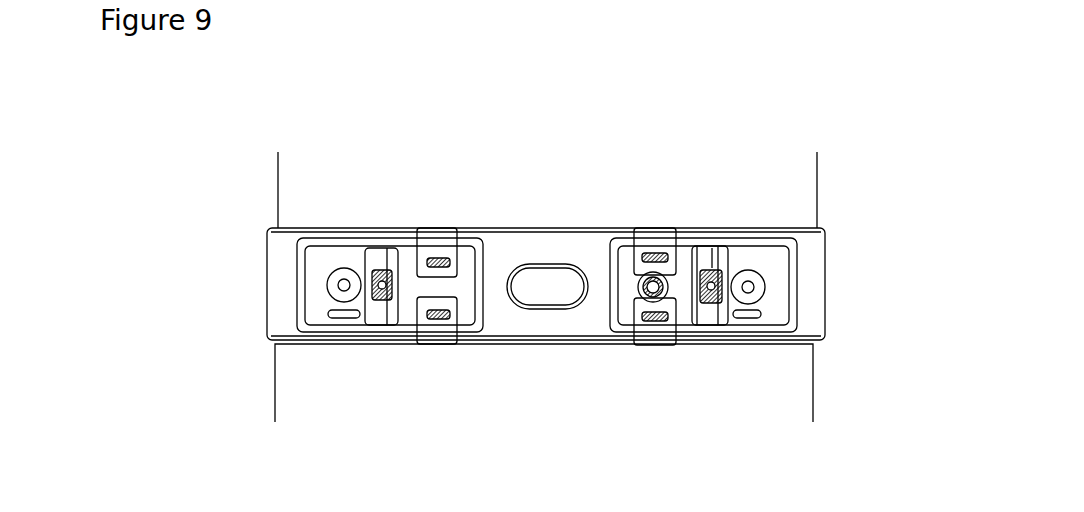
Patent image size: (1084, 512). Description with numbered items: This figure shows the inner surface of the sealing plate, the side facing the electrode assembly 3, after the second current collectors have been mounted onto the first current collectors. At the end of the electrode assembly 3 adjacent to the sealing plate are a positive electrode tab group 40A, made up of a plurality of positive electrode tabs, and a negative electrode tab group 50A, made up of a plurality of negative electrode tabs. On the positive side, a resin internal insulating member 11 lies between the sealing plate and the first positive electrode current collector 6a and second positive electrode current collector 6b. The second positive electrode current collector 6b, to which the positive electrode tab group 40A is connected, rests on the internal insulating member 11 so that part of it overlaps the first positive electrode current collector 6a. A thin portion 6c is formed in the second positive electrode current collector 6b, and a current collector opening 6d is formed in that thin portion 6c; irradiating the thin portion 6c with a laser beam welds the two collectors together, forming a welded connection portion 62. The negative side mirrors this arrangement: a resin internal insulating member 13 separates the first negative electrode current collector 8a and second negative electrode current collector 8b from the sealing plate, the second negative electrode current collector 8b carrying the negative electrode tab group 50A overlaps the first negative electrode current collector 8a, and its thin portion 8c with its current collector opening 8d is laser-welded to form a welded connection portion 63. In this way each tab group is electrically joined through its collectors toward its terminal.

The electrode assembly 3 is at (795, 181).
The first positive electrode current collector 6a is at (770, 263).
The second positive electrode current collector 6b is at (628, 287).
The thin portion 6c is at (702, 330).
The current collector opening 6d is at (712, 268).
The first negative electrode current collector 8a is at (328, 263).
The second negative electrode current collector 8b is at (483, 265).
The thin portion 8c is at (365, 320).
The current collector opening 8d is at (393, 258).
The internal insulating member 11 is at (793, 317).
The internal insulating member 13 is at (297, 323).
The positive electrode tab group 40A is at (658, 248).
The negative electrode tab group 50A is at (432, 250).
The welded connection portion 62 is at (717, 330).
The welded connection portion 63 is at (383, 302).